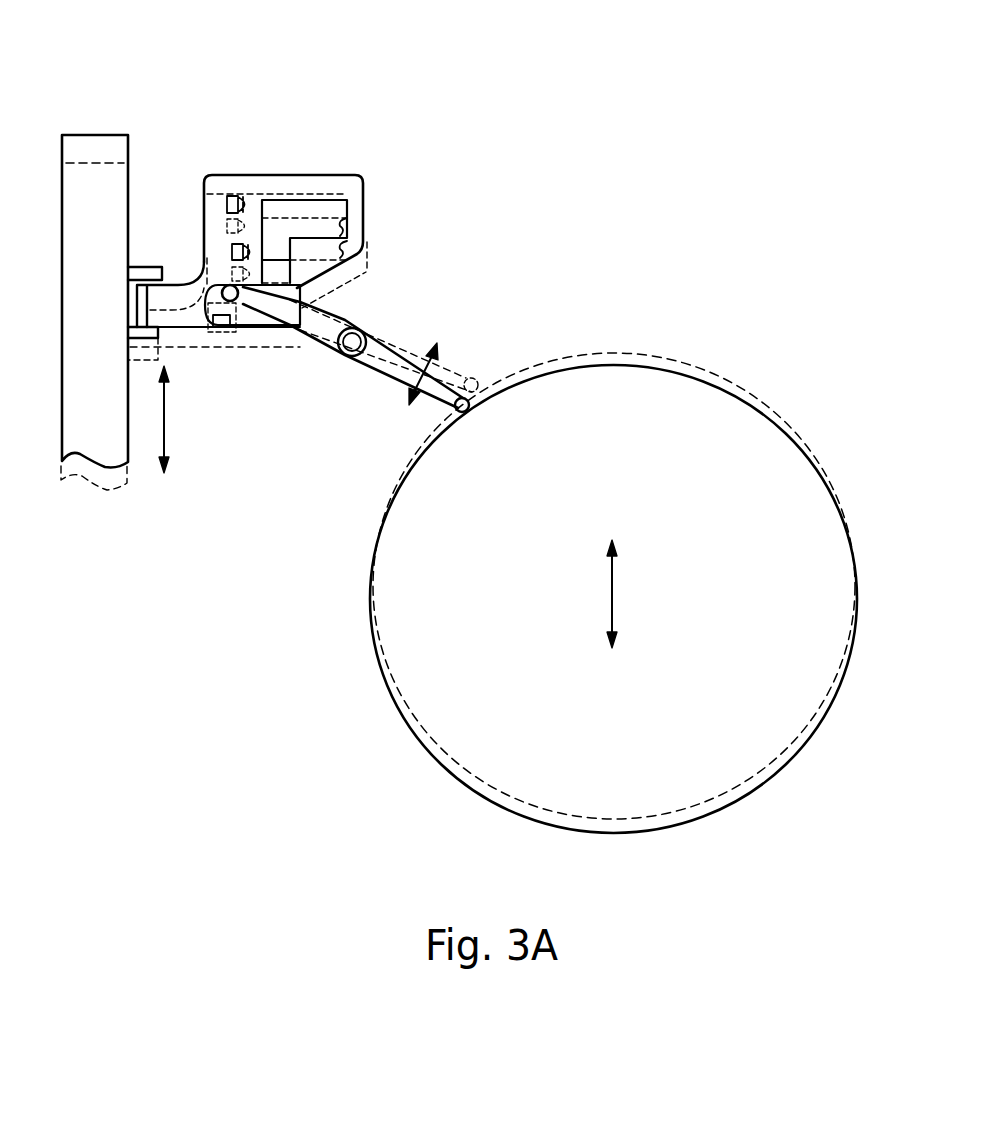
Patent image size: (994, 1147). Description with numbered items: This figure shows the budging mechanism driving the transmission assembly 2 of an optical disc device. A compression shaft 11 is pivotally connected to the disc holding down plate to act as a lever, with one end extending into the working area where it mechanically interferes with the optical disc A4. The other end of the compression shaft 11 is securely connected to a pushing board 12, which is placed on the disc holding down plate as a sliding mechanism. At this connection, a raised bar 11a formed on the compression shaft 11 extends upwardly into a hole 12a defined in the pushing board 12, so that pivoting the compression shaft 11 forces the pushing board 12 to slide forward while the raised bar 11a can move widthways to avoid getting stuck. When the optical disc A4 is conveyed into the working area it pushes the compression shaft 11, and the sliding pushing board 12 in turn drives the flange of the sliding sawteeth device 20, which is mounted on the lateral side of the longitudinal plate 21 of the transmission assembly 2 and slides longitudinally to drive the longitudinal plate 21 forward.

The transmission assembly 2 is at (98, 135).
The longitudinal plate 21 is at (130, 228).
The sliding sawteeth device 20 is at (140, 337).
The pushing board 12 is at (287, 175).
The hole 12a is at (212, 300).
The compression shaft 11 is at (362, 320).
The raised bar 11a is at (238, 307).
The optical disc A4 is at (396, 705).